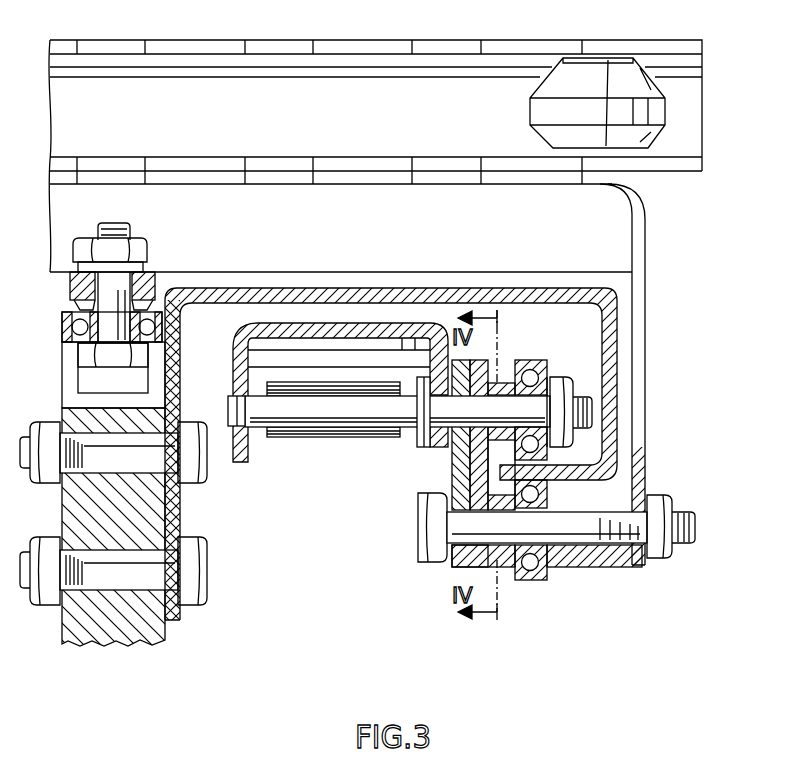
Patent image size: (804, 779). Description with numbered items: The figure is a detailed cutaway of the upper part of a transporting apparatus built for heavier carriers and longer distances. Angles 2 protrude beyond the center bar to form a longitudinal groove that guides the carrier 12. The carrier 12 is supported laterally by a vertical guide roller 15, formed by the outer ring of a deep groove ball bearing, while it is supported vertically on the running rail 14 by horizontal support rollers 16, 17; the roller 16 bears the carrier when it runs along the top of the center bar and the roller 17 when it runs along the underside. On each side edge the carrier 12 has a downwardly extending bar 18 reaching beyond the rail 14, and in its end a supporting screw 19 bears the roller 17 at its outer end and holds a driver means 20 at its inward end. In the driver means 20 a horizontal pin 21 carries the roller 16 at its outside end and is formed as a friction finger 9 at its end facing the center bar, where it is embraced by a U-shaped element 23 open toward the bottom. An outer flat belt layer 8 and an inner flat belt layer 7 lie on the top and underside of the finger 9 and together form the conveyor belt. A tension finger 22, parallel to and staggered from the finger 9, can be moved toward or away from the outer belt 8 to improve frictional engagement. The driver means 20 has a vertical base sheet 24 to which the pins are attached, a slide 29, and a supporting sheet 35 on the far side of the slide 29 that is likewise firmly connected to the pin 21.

The carrier 12 is at (413, 51).
The angles 2 is at (172, 318).
The inner flat belt layer 7 is at (311, 438).
The outer flat belt layer 8 is at (272, 368).
The friction finger 9 is at (347, 414).
The running rail 14 is at (562, 462).
The vertical guide roller 15 is at (157, 302).
The horizontal support roller 16 is at (526, 366).
The horizontal support roller 17 is at (547, 568).
The downwardly extending bar 18 is at (639, 243).
The supporting screw 19 is at (420, 538).
The driver means 20 is at (351, 498).
The pin 21 is at (426, 434).
The tension finger 22 is at (265, 427).
The U-shaped element 23 is at (240, 356).
The base sheet 24 is at (497, 550).
The slide 29 is at (495, 562).
The supporting sheet 35 is at (452, 562).